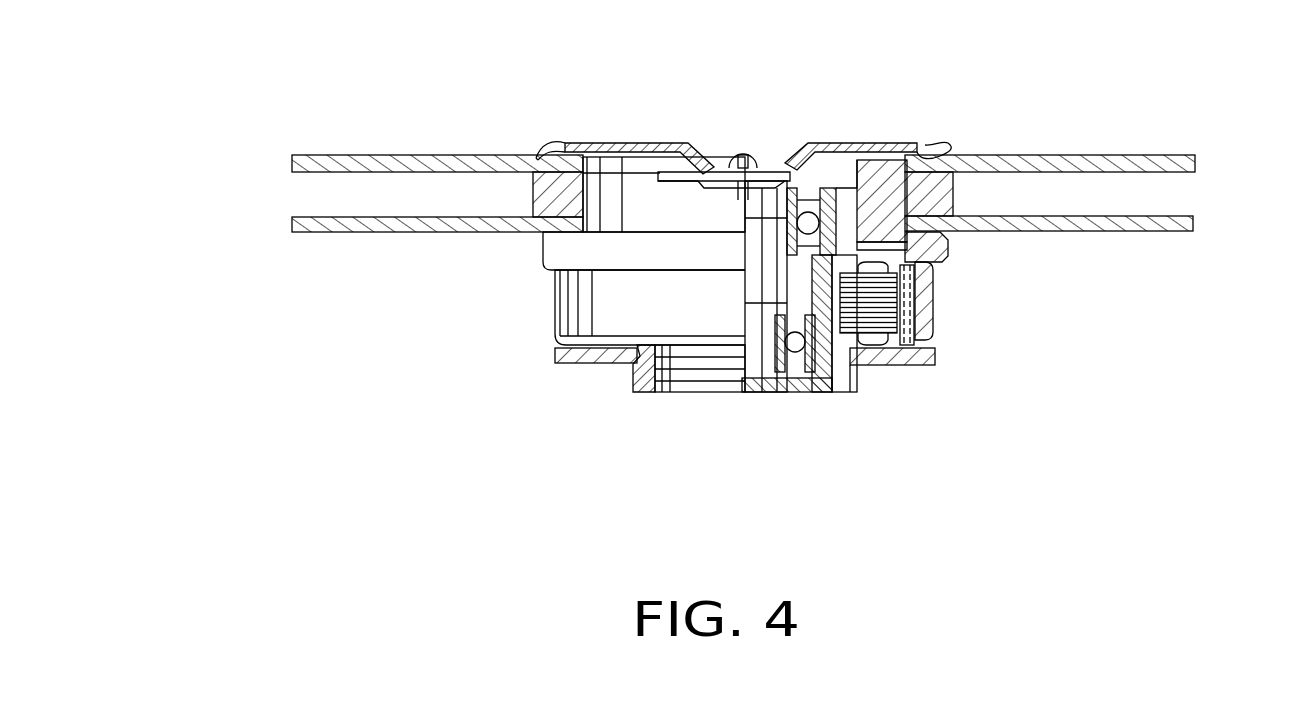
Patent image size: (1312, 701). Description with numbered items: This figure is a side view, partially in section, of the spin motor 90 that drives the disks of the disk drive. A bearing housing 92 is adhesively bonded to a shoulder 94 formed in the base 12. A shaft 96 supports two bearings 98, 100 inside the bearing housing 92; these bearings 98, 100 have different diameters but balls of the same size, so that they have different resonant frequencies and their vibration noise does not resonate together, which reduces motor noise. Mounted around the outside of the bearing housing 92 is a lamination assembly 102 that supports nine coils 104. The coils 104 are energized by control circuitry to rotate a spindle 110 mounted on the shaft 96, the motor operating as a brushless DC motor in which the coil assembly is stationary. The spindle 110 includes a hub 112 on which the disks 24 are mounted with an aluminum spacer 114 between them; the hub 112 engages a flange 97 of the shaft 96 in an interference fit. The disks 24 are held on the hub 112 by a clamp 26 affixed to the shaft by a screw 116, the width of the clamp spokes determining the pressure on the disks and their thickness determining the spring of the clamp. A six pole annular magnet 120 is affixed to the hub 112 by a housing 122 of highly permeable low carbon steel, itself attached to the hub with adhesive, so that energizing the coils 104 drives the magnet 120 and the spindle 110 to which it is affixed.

The base 12 is at (557, 363).
The disks 24 is at (291, 233).
The clamp 26 is at (636, 142).
The hub assembly 90 is at (362, 335).
The bearing housing 92 is at (828, 392).
The shoulder 94 is at (636, 363).
The shaft 96 is at (744, 283).
The flange 97 is at (778, 178).
The bearing 98 is at (781, 384).
The bearing 100 is at (828, 192).
The lamination assembly 102 is at (934, 290).
The coils 104 is at (947, 262).
The spindle 110 is at (553, 92).
The hub 112 is at (920, 152).
The aluminum spacer 114 is at (953, 200).
The screw 116 is at (741, 152).
The annular magnet 120 is at (934, 322).
The housing 122 is at (932, 340).